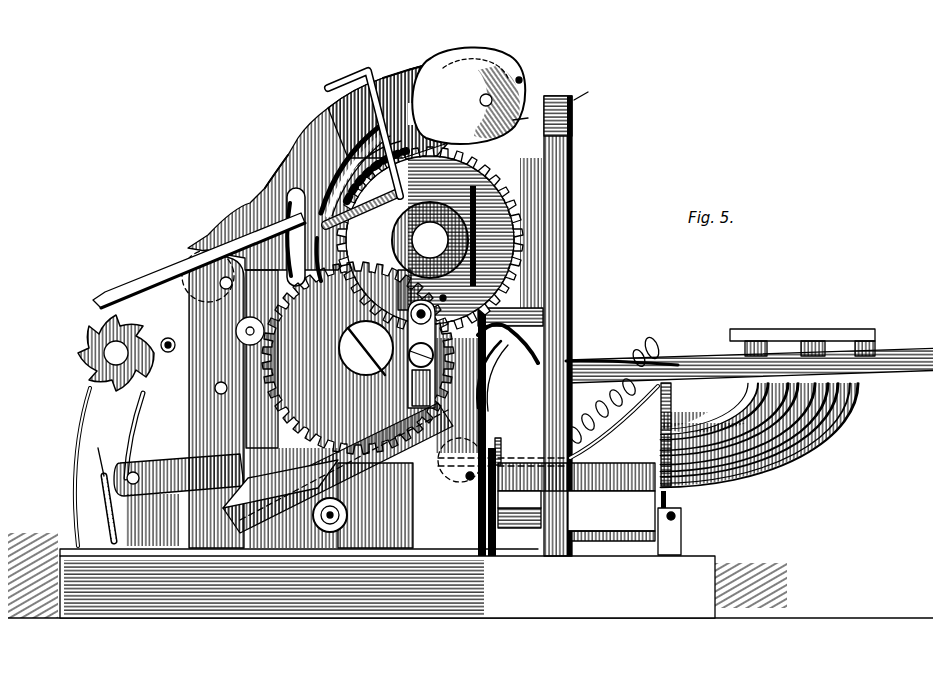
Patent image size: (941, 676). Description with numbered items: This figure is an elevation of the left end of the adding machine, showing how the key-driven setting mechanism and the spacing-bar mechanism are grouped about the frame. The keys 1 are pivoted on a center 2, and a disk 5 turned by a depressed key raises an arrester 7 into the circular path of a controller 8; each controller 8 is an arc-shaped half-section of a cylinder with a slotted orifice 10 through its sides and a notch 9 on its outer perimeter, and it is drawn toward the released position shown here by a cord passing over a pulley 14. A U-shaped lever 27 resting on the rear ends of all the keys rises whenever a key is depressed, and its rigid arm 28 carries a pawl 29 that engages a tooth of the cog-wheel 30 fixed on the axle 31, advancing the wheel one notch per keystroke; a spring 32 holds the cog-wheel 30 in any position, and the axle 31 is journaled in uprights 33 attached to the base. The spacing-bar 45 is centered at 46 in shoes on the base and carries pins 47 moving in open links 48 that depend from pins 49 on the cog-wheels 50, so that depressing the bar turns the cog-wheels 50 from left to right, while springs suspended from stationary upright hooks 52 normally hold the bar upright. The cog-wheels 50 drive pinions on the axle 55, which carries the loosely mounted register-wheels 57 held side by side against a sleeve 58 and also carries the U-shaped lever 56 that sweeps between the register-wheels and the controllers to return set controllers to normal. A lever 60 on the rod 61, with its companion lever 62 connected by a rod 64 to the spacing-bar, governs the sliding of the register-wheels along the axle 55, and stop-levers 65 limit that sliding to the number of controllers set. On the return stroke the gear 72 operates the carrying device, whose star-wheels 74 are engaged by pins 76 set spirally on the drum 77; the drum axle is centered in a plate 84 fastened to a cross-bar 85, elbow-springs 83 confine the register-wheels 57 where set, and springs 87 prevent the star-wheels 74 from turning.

The keys 1 is at (802, 333).
The center 2 is at (338, 503).
The disk 5 is at (486, 445).
The arrester 7 is at (642, 336).
The controller 8 is at (312, 108).
The notch 9 is at (280, 152).
The slotted orifice 10 is at (280, 190).
The pulley 14 is at (210, 248).
The U-shaped lever 27 is at (338, 468).
The arm 28 is at (179, 475).
The pawl 29 is at (202, 374).
The cog-wheel 30 is at (72, 344).
The axle 31 is at (100, 350).
The spring 32 is at (78, 432).
The uprights 33 is at (139, 497).
The spacing-bar 45 is at (905, 360).
The center of spacing-bar 46 is at (178, 525).
The screws or pins 47 is at (393, 355).
The open links 48 is at (404, 380).
The pins 49 is at (402, 304).
The cog-wheels 50 is at (358, 358).
The stationary upright hooks 52 is at (593, 86).
The axle 55 is at (430, 240).
The U-shaped lever 56 is at (383, 190).
The register-wheels 57 is at (508, 238).
The sleeve 58 is at (449, 292).
The lever 60 is at (482, 370).
The rod or shaft 61 is at (586, 508).
The lever 62 is at (666, 497).
The rod 64 is at (664, 416).
The stop-levers 65 is at (150, 278).
The gear 72 is at (528, 165).
The star-wheels 74 is at (423, 114).
The pins 76 is at (540, 88).
The drum 77 is at (513, 104).
The elbow-springs 83 is at (345, 160).
The plate 84 is at (356, 72).
The cross-bar 85 is at (390, 107).
The springs 87 is at (386, 68).